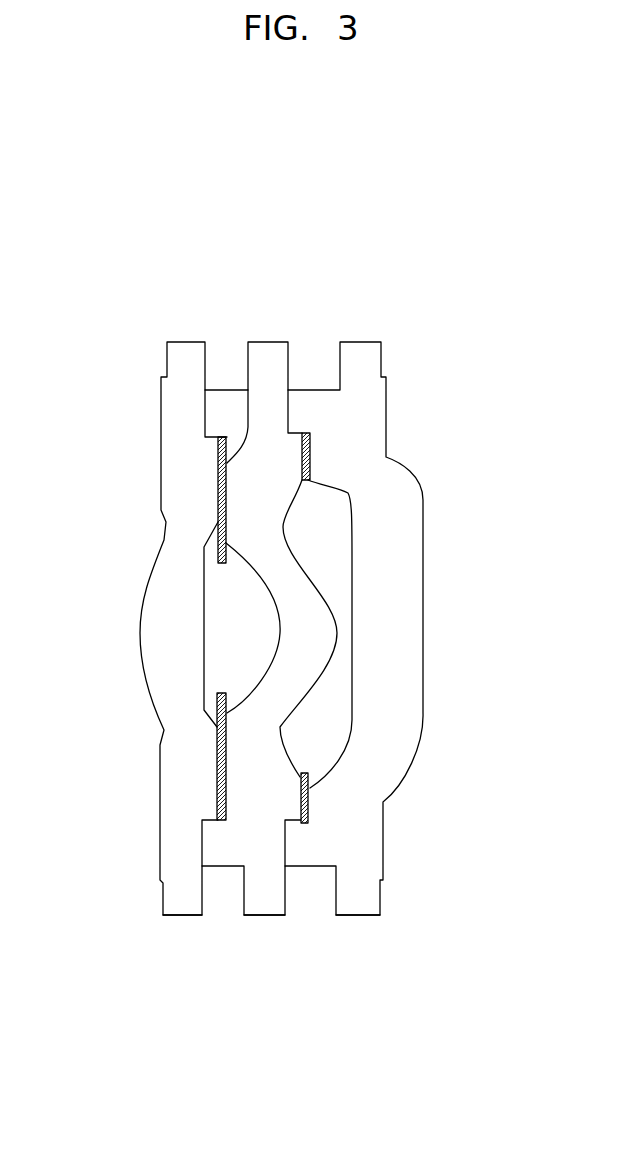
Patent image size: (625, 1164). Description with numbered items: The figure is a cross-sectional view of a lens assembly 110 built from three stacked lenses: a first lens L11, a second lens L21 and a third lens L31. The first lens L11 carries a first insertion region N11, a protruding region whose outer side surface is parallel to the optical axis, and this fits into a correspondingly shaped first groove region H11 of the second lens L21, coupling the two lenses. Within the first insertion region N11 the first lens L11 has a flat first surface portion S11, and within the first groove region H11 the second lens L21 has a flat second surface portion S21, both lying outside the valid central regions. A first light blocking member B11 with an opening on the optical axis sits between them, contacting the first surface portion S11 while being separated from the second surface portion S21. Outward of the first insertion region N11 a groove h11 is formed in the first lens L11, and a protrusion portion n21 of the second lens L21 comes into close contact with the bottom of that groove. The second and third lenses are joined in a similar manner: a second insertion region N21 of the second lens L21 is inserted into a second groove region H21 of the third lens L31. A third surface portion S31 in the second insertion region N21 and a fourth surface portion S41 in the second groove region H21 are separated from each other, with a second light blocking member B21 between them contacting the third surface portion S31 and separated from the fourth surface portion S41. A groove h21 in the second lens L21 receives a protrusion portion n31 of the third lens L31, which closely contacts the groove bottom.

The lens assembly 110 is at (432, 308).
The protrusion portion n21 is at (218, 413).
The first groove region H11 is at (232, 462).
The second insertion region N21 is at (298, 455).
The groove h21 is at (279, 396).
The protrusion portion n31 is at (293, 413).
The second groove region H21 is at (309, 447).
The fourth surface portion S41 is at (312, 463).
The second light blocking member B21 is at (352, 490).
The groove h11 is at (204, 410).
The first insertion region N11 is at (216, 471).
The first surface portion S11 is at (218, 494).
The first light blocking member B11 is at (219, 544).
The third surface portion S31 is at (298, 456).
The second surface portion S21 is at (227, 503).
The first lens L11 is at (180, 916).
The second lens L21 is at (261, 916).
The third lens L31 is at (354, 916).